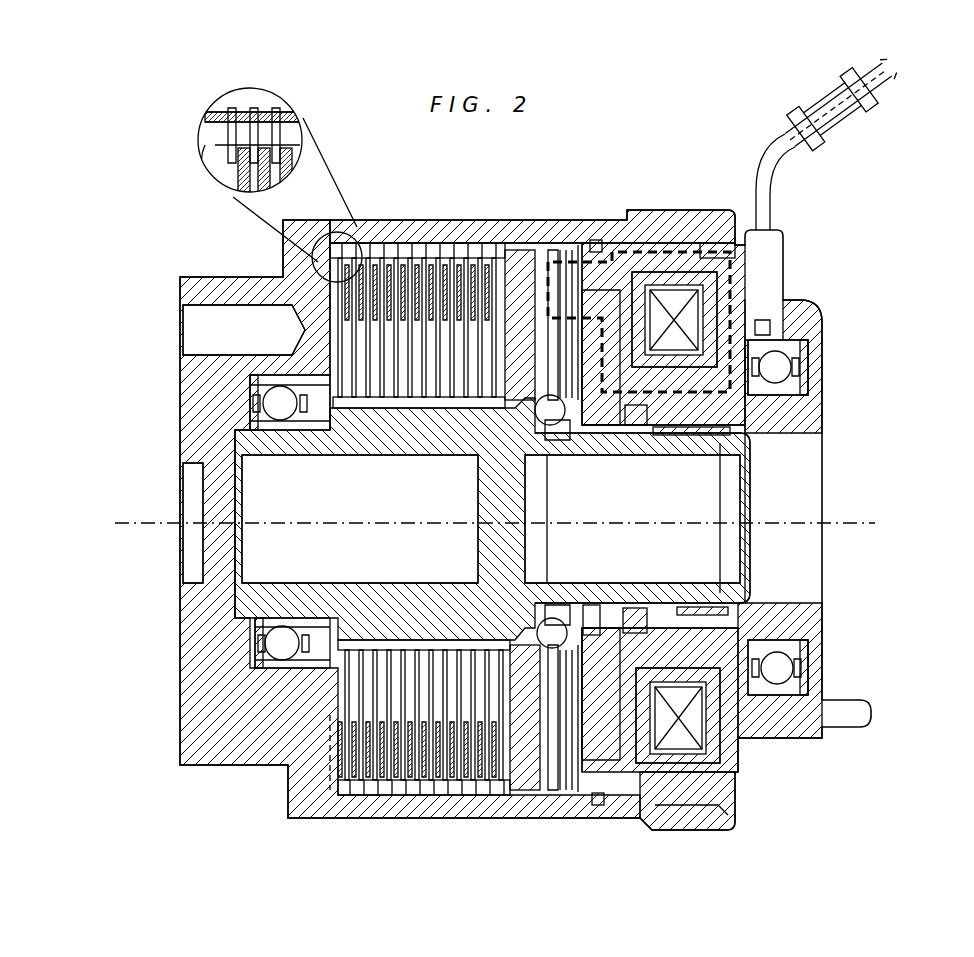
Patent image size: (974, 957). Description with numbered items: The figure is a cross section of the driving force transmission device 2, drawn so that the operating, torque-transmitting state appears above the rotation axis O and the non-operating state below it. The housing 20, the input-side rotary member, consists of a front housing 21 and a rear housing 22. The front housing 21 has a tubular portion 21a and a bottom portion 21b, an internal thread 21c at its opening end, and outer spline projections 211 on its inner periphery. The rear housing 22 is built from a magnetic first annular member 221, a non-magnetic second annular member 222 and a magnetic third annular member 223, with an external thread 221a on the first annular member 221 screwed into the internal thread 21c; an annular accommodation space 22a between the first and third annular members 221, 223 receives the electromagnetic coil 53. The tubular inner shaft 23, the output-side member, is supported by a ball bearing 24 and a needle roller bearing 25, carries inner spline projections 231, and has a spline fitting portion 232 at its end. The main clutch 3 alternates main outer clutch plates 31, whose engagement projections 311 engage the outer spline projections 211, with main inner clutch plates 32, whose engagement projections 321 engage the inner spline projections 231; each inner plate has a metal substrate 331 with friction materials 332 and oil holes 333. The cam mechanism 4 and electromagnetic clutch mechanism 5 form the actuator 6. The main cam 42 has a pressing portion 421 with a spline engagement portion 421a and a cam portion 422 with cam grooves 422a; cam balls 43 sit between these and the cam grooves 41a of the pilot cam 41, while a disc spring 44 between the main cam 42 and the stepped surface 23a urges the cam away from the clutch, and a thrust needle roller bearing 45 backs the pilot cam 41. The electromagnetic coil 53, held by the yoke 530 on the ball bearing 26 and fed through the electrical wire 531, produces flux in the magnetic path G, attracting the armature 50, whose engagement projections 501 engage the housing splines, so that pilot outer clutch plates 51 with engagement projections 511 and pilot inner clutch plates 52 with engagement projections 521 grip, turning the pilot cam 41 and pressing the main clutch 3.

The driving force transmission device 2 is at (876, 136).
The housing 20 is at (838, 178).
The front housing 21 is at (750, 210).
The tubular portion 21a is at (392, 232).
The bottom portion 21b is at (215, 727).
The internal thread 21c is at (717, 240).
The rear housing 22 is at (749, 250).
The accommodation space 22a is at (754, 772).
The inner shaft 23 is at (770, 602).
The stepped surface 23a is at (472, 585).
The ball bearing 24 is at (258, 427).
The needle roller bearing 25 is at (730, 430).
The ball bearing 26 is at (802, 348).
The main clutch 3 is at (299, 497).
The main outer clutch plate 31 is at (236, 140).
The engagement projection 311 is at (238, 118).
The main inner clutch plate 32 is at (122, 148).
The engagement projection 321 is at (392, 420).
The substrate 331 is at (243, 168).
The friction material 332 is at (240, 158).
The oil hole 333 is at (340, 345).
The cam mechanism 4 is at (510, 240).
The pilot cam 41 is at (623, 455).
The cam groove 41a is at (580, 455).
The main cam 42 is at (412, 160).
The pressing portion 421 is at (505, 252).
The spline engagement portion 421a is at (478, 458).
The cam portion 422 is at (522, 256).
The cam groove 422a is at (557, 455).
The cam ball 43 is at (556, 424).
The disc spring 44 is at (530, 455).
The thrust needle roller bearing 45 is at (603, 613).
The electromagnetic clutch mechanism 5 is at (552, 228).
The armature 50 is at (548, 790).
The engagement projection 501 is at (557, 790).
The pilot outer clutch plate 51 is at (600, 800).
The engagement projection 511 is at (566, 795).
The pilot inner clutch plate 52 is at (590, 795).
The engagement projection 521 is at (585, 627).
The electromagnetic coil 53 is at (693, 308).
The yoke 530 is at (810, 327).
The electrical wire 531 is at (772, 160).
The actuator 6 is at (534, 158).
The outer spline projection 211 is at (252, 118).
The first annular member 221 is at (648, 240).
The external thread 221a is at (682, 805).
The second annular member 222 is at (582, 287).
The third annular member 223 is at (810, 407).
The inner spline projection 231 is at (397, 642).
The spline fitting portion 232 is at (667, 580).
The magnetic path G is at (683, 237).
The rotation axis O is at (891, 491).